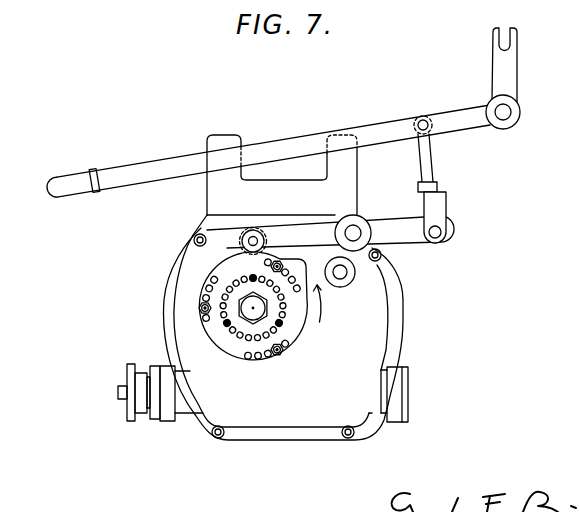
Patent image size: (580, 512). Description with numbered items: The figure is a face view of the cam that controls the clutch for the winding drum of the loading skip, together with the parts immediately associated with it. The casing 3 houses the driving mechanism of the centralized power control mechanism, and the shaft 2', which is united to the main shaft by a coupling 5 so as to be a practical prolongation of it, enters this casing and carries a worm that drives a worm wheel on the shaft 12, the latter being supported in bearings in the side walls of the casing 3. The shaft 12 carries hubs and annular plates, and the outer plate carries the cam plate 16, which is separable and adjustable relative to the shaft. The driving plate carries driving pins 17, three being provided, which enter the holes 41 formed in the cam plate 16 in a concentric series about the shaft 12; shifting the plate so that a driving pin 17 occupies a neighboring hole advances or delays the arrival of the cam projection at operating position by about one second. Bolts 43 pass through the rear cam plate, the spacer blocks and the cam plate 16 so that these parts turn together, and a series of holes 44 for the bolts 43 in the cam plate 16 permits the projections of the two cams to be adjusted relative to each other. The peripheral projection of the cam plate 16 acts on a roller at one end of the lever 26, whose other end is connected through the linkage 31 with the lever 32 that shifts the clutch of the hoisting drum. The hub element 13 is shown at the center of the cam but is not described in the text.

The casing 3 is at (376, 311).
The coupling 5 is at (126, 407).
The shaft 2' is at (125, 439).
The shaft 12 is at (289, 326).
The hub nut 13 is at (252, 316).
The cam plate 16 is at (266, 311).
The driving pin 17 is at (223, 325).
The lever 26 is at (413, 240).
The linkage 31 is at (437, 203).
The lever 32 is at (146, 172).
The holes 41 is at (236, 283).
The bolts 43 is at (277, 262).
The holes 44 is at (206, 288).